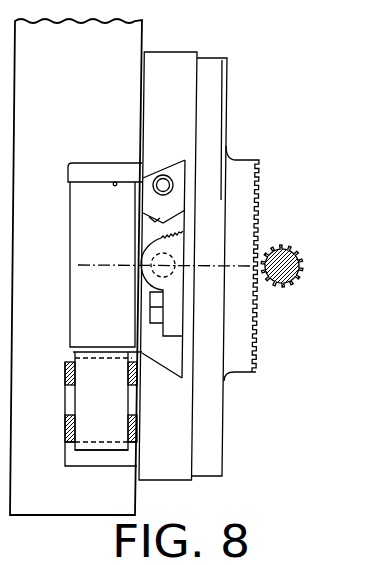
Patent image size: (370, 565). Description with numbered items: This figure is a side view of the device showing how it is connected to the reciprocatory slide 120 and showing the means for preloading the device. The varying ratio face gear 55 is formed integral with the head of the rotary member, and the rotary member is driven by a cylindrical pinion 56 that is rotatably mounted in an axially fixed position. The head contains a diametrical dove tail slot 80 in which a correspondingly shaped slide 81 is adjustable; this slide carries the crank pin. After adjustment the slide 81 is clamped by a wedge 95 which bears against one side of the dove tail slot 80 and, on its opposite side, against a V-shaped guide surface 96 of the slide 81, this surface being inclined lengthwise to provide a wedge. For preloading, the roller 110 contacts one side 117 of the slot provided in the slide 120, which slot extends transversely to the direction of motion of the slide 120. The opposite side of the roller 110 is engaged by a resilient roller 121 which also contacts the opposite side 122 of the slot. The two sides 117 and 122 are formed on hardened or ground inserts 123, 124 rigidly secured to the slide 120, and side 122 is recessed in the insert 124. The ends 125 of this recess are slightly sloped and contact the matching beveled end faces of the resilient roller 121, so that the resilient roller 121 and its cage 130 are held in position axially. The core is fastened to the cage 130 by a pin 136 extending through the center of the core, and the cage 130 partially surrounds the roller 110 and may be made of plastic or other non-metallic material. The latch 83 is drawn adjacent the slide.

The slide 120 is at (60, 125).
The side of slot 117 is at (116, 183).
The insert 123 is at (82, 173).
The dove tail slot 80 is at (145, 180).
The wedge 95 is at (172, 167).
The roller 110 is at (80, 236).
The V-shaped guide surface 96 is at (150, 216).
The latch 83 is at (143, 274).
The cylindrical pinion 56 is at (270, 288).
The varying ratio face gear 55 is at (250, 355).
The slide 81 is at (169, 347).
The pin 136 is at (68, 395).
The resilient roller 121 is at (103, 425).
The cage 130 is at (68, 425).
The ends of recess 125 is at (70, 446).
The insert 124 is at (80, 460).
The opposite side of slot 122 is at (103, 451).